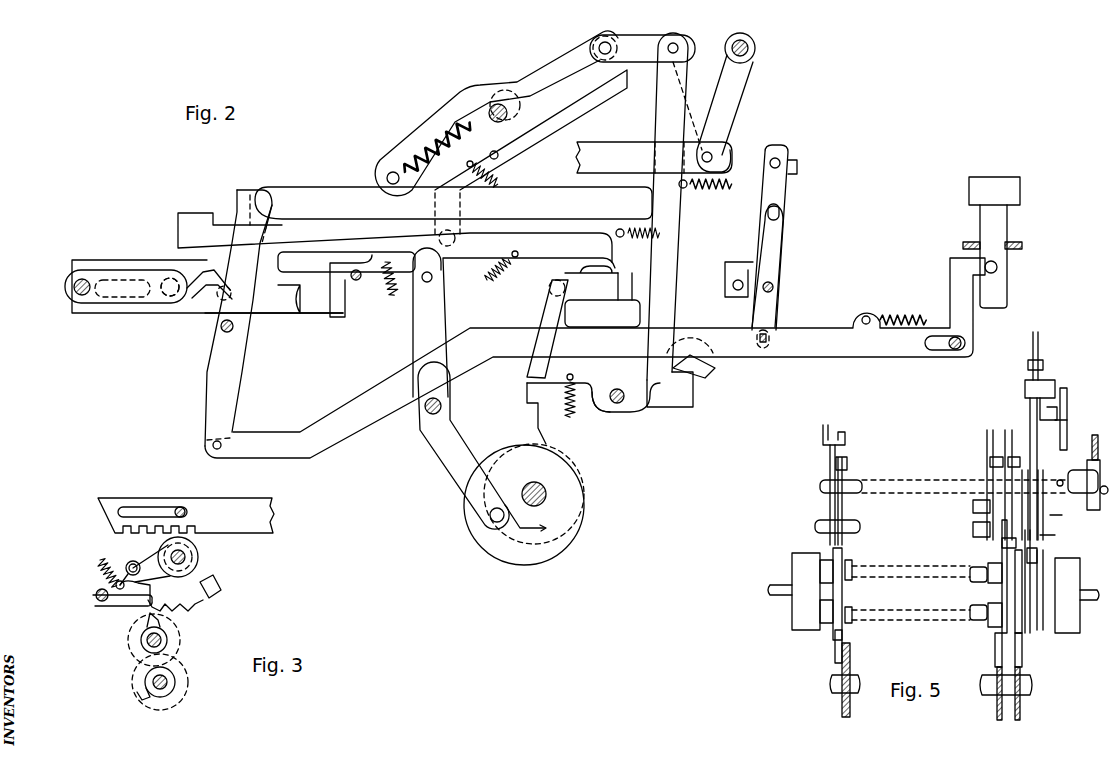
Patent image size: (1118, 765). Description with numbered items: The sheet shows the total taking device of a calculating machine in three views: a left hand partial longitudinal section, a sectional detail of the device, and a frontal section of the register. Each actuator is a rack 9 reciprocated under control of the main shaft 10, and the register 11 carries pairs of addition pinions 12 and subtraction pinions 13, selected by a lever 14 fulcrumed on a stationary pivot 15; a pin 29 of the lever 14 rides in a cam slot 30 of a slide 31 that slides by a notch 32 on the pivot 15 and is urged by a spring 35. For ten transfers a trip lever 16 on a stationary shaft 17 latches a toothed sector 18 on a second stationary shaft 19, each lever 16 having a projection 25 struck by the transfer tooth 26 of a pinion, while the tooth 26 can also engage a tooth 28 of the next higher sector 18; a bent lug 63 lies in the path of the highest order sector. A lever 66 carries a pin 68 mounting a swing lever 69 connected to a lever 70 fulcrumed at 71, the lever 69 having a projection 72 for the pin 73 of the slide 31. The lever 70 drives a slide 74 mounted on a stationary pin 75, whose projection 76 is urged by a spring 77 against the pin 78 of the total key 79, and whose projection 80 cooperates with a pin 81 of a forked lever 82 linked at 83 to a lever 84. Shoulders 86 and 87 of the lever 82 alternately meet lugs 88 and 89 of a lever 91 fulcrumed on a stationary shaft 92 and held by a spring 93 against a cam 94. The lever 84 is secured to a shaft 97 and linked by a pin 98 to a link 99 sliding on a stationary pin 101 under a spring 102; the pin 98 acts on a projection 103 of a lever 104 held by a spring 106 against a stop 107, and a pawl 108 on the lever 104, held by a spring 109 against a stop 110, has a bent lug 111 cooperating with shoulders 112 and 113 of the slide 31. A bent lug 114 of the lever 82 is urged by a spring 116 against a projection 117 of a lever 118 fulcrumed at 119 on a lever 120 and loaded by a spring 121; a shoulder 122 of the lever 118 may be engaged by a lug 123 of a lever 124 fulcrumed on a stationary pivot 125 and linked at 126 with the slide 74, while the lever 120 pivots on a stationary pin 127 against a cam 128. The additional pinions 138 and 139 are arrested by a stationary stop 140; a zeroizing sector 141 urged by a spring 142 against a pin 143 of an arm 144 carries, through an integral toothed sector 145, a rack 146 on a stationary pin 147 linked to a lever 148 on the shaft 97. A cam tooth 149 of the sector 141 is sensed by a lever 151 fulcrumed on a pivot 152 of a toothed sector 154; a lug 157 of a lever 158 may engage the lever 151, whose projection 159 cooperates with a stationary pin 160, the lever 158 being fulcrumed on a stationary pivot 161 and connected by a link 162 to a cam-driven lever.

In FIG. 5, the rack 9 is at (842, 700).
In FIG. 2, the main shaft 10 is at (546, 498).
In FIG. 5, the register 11 is at (1091, 644).
In FIG. 5, the addition pinions 12 is at (855, 601).
In FIG. 5, the subtraction pinions 13 is at (847, 560).
In FIG. 2, the lever 14 is at (190, 302).
In FIG. 2, the stationary pivot 15 is at (85, 296).
In FIG. 5, the trip lever 16 is at (846, 590).
In FIG. 3, the stationary shaft 17 is at (96, 594).
In FIG. 5, the stationary shaft 17 is at (846, 528).
In FIG. 5, the toothed sector 18 is at (830, 503).
In FIG. 3, the stationary shaft 19 is at (186, 557).
In FIG. 5, the stationary shaft 19 is at (976, 486).
In FIG. 5, the projection 25 is at (835, 640).
In FIG. 3, the transfer tooth 26 is at (143, 621).
In FIG. 5, the transfer tooth 26 is at (986, 558).
In FIG. 5, the tooth 28 is at (1000, 543).
In FIG. 2, the pin 29 is at (168, 297).
In FIG. 2, the cam slot 30 is at (192, 275).
In FIG. 2, the slide 31 is at (330, 190).
In FIG. 2, the notch 32 is at (110, 272).
In FIG. 2, the spring 35 is at (625, 237).
In FIG. 5, the bent lug 63 is at (846, 441).
In FIG. 2, the lever 66 is at (798, 166).
In FIG. 2, the pin 68 is at (777, 158).
In FIG. 2, the swing lever 69 is at (790, 190).
In FIG. 2, the lever 70 is at (778, 301).
In FIG. 2, the fulcrum 71 is at (774, 286).
In FIG. 2, the projection 72 is at (727, 268).
In FIG. 2, the pin 73 is at (732, 287).
In FIG. 2, the slide 74 is at (350, 412).
In FIG. 2, the stationary pin 75 is at (960, 343).
In FIG. 2, the projection 76 is at (975, 258).
In FIG. 2, the spring 77 is at (905, 316).
In FIG. 2, the pin 78 is at (998, 267).
In FIG. 2, the total key 79 is at (994, 180).
In FIG. 2, the projection 80 is at (578, 314).
In FIG. 2, the pin 81 is at (548, 285).
In FIG. 2, the forked lever 82 is at (672, 250).
In FIG. 2, the link pivot 83 is at (662, 60).
In FIG. 2, the lever 84 is at (690, 60).
In FIG. 2, the shoulder 86 is at (694, 393).
In FIG. 2, the shoulder 87 is at (542, 384).
In FIG. 2, the lug 88 is at (717, 366).
In FIG. 2, the lug 89 is at (540, 410).
In FIG. 2, the lever 91 is at (592, 395).
In FIG. 2, the stationary shaft 92 is at (619, 405).
In FIG. 2, the spring 93 is at (573, 420).
In FIG. 2, the cam 94 is at (488, 546).
In FIG. 2, the shaft 97 is at (756, 48).
In FIG. 2, the pin 98 is at (598, 44).
In FIG. 2, the link 99 is at (468, 98).
In FIG. 2, the stationary pin 101 is at (512, 118).
In FIG. 2, the spring 102 is at (418, 155).
In FIG. 2, the projection 103 is at (625, 82).
In FIG. 2, the lever 104 is at (437, 182).
In FIG. 2, the spring 106 is at (502, 184).
In FIG. 2, the stationary stop 107 is at (499, 155).
In FIG. 2, the pawl 108 is at (345, 300).
In FIG. 2, the spring 109 is at (392, 298).
In FIG. 2, the stationary stop 110 is at (358, 280).
In FIG. 2, the bent lug 111 is at (288, 255).
In FIG. 2, the shoulder 112 is at (250, 313).
In FIG. 2, the shoulder 113 is at (302, 300).
In FIG. 2, the bent lug 114 is at (596, 268).
In FIG. 2, the spring 116 is at (734, 182).
In FIG. 2, the projection 117 is at (624, 305).
In FIG. 2, the lever 118 is at (529, 327).
In FIG. 2, the fulcrum 119 is at (435, 283).
In FIG. 2, the lever 120 is at (462, 425).
In FIG. 2, the spring 121 is at (500, 278).
In FIG. 2, the shoulder 122 is at (213, 213).
In FIG. 2, the lug 123 is at (243, 190).
In FIG. 2, the lever 124 is at (240, 392).
In FIG. 2, the stationary pivot 125 is at (227, 333).
In FIG. 2, the link pivot 126 is at (213, 446).
In FIG. 2, the stationary pin 127 is at (444, 398).
In FIG. 2, the cam 128 is at (584, 470).
In FIG. 3, the addition pinion 138 is at (184, 682).
In FIG. 5, the addition pinion 138 is at (1040, 628).
In FIG. 3, the subtraction pinion 139 is at (176, 640).
In FIG. 5, the subtraction pinion 139 is at (1048, 570).
In FIG. 3, the stationary stop 140 is at (146, 606).
In FIG. 5, the stationary stop 140 is at (1038, 548).
In FIG. 3, the zeroizing toothed sector 141 is at (200, 608).
In FIG. 5, the zeroizing toothed sector 141 is at (1036, 468).
In FIG. 3, the spring 142 is at (106, 570).
In FIG. 3, the pin 143 is at (124, 566).
In FIG. 5, the pin 143 is at (1050, 513).
In FIG. 3, the arm 144 is at (145, 560).
In FIG. 5, the arm 144 is at (1086, 505).
In FIG. 3, the toothed sector 145 is at (198, 545).
In FIG. 5, the toothed sector 145 is at (1088, 478).
In FIG. 2, the rack 146 is at (590, 146).
In FIG. 3, the rack 146 is at (272, 512).
In FIG. 5, the rack 146 is at (1093, 437).
In FIG. 3, the stationary pin 147 is at (186, 512).
In FIG. 2, the lever 148 is at (738, 100).
In FIG. 3, the cam tooth 149 is at (215, 588).
In FIG. 5, the cam tooth 149 is at (1048, 535).
In FIG. 5, the sensing lever 151 is at (1030, 402).
In FIG. 5, the pivot 152 is at (1025, 470).
In FIG. 5, the toothed sector 154 is at (958, 486).
In FIG. 5, the lug 157 is at (1045, 382).
In FIG. 5, the lever 158 is at (1058, 412).
In FIG. 5, the projection 159 is at (1040, 358).
In FIG. 5, the stationary pin 160 is at (1028, 368).
In FIG. 5, the stationary pivot 161 is at (1068, 420).
In FIG. 5, the link 162 is at (1066, 392).